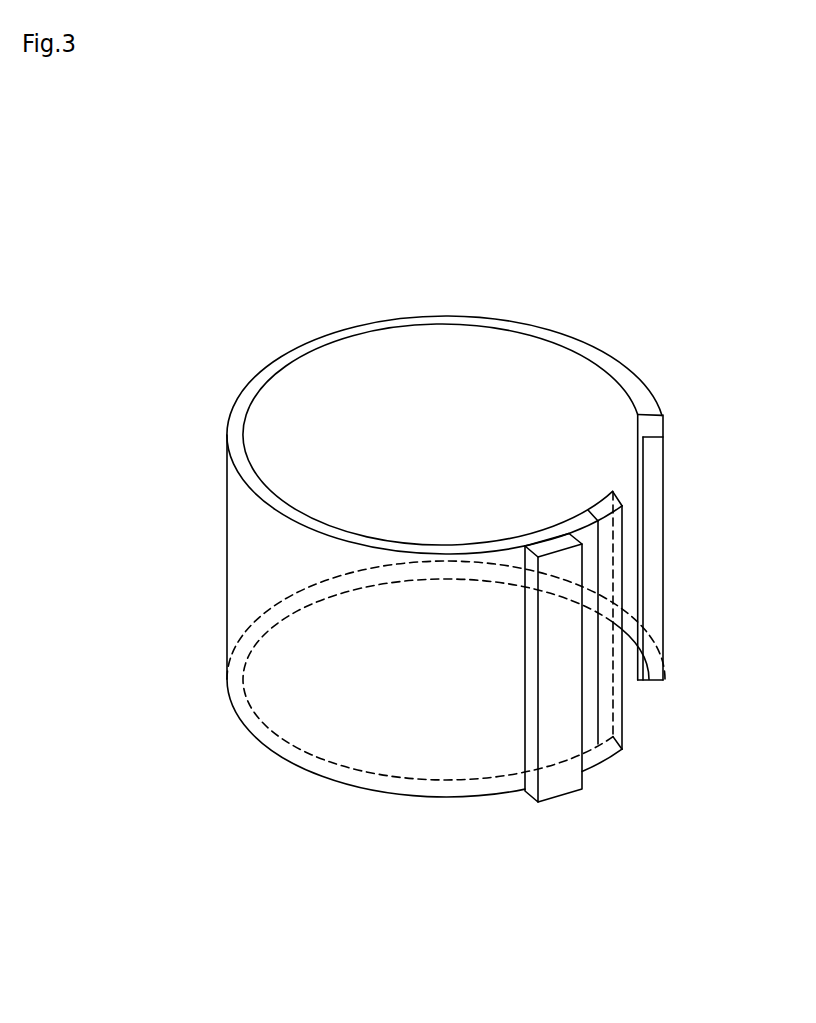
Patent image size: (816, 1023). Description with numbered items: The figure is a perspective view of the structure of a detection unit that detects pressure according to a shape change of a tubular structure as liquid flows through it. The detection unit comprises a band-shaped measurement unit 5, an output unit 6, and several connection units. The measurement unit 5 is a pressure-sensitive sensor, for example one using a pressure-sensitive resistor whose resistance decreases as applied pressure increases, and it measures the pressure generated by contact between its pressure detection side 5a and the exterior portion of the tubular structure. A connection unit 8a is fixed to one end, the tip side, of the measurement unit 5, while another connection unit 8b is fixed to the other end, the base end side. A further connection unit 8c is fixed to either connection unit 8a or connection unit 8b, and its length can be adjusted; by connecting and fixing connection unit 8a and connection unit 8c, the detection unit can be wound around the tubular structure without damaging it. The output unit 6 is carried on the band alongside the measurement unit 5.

The measurement unit 5 is at (342, 333).
The pressure detection side 5a is at (472, 392).
The connection unit 8a is at (667, 552).
The connection unit 8b is at (573, 508).
The connection unit 8c is at (602, 502).
The output unit 6 is at (562, 798).